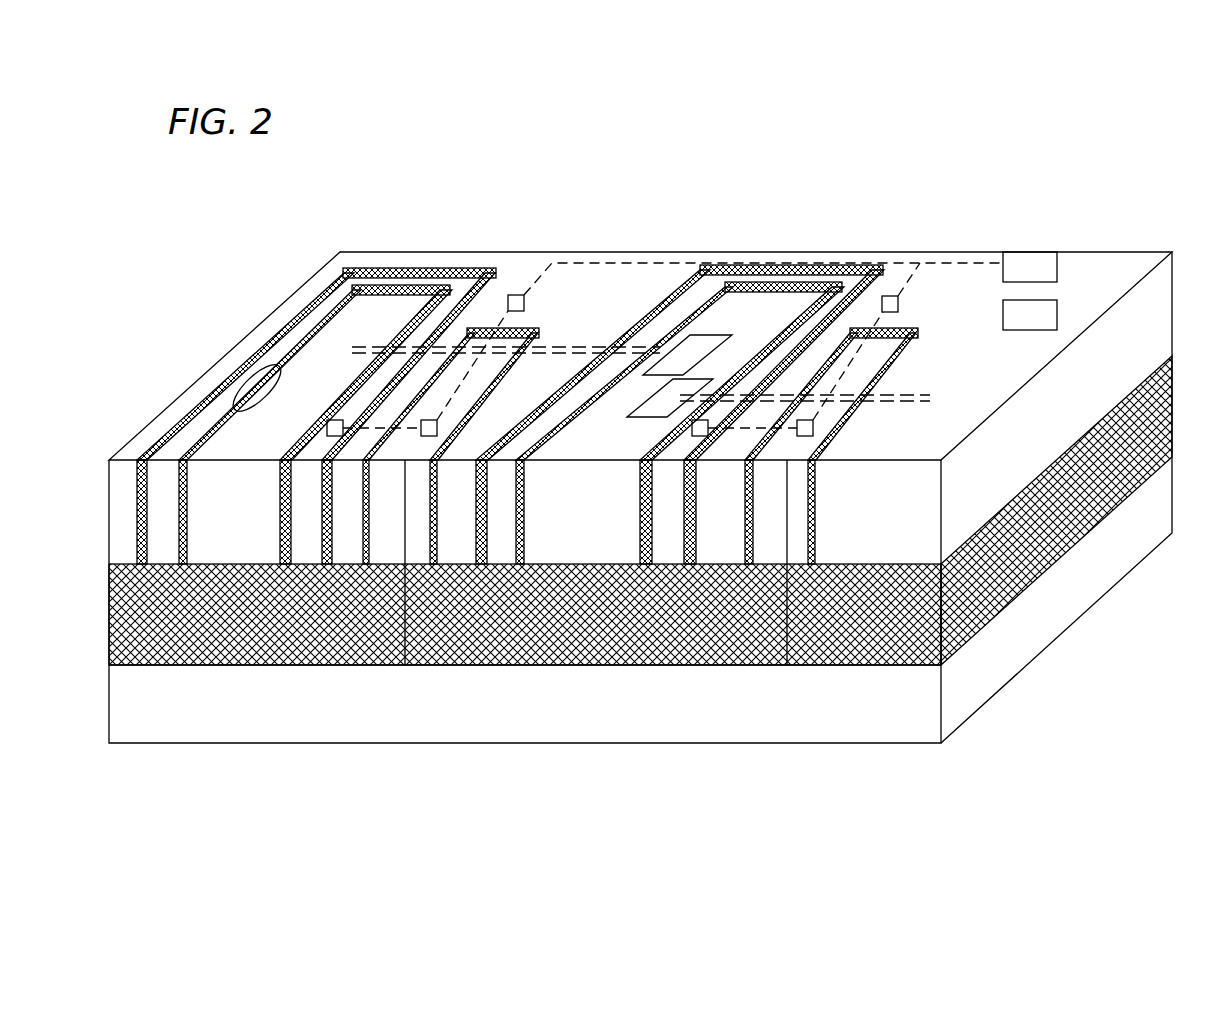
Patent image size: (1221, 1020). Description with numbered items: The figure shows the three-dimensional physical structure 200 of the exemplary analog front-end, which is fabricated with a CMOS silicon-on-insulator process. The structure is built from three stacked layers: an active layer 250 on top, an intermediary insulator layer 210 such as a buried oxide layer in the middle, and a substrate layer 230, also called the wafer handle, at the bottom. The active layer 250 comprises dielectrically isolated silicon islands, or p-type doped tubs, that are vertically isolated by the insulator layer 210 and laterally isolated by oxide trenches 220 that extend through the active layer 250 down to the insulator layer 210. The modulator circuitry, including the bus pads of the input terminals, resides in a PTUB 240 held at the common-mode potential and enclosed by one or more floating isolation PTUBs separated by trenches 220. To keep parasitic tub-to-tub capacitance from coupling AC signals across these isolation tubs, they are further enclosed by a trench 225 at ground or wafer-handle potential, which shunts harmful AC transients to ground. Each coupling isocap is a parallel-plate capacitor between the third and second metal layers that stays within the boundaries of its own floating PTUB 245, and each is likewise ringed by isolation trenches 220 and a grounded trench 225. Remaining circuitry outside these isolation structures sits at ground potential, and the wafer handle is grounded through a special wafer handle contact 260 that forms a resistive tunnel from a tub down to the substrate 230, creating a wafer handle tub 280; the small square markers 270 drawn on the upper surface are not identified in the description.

The three-dimensional physical structure 200 is at (1020, 176).
The insulator layer 210 is at (876, 645).
The trenches 220 is at (222, 391).
The further trench 225 is at (138, 514).
The substrate layer 230 is at (652, 743).
The PTUB 240 is at (275, 499).
The floating PTUB 245 is at (752, 305).
The active layer 250 is at (972, 376).
The wafer handle contact 260 is at (788, 640).
The via 270 is at (822, 427).
The wafer handle tub 280 is at (426, 446).